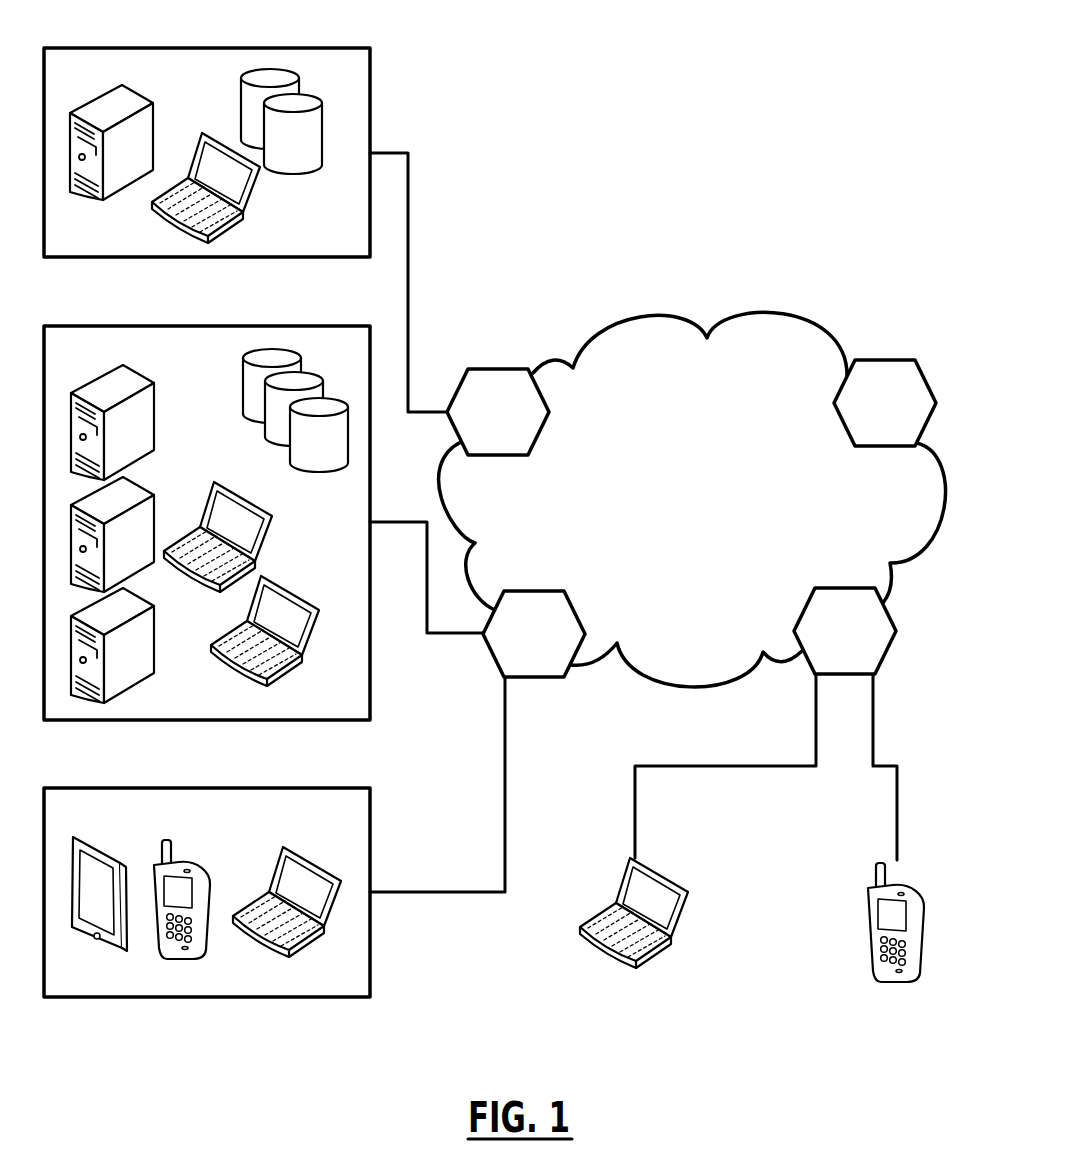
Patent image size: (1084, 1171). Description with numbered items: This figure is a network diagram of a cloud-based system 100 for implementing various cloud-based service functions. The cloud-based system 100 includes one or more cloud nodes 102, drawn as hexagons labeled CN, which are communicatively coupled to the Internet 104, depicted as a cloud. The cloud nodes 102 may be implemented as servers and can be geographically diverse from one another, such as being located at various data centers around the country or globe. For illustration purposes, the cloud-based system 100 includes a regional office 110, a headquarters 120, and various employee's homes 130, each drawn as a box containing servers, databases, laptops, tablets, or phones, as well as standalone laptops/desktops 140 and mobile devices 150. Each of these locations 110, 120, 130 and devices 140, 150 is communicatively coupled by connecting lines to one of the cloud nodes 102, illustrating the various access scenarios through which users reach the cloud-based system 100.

The cloud-based system 100 is at (724, 91).
The cloud node 102 is at (492, 368).
The Internet 104 is at (825, 330).
The regional office 110 is at (280, 47).
The headquarters 120 is at (286, 324).
The employee's home 130 is at (292, 787).
The laptop/desktop 140 is at (690, 893).
The mobile device 150 is at (865, 913).